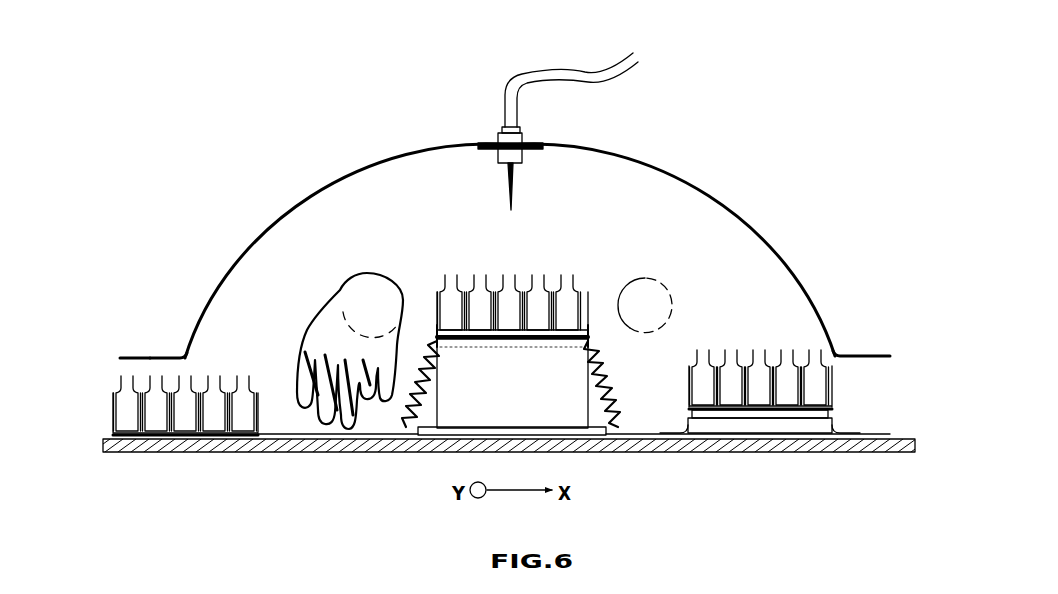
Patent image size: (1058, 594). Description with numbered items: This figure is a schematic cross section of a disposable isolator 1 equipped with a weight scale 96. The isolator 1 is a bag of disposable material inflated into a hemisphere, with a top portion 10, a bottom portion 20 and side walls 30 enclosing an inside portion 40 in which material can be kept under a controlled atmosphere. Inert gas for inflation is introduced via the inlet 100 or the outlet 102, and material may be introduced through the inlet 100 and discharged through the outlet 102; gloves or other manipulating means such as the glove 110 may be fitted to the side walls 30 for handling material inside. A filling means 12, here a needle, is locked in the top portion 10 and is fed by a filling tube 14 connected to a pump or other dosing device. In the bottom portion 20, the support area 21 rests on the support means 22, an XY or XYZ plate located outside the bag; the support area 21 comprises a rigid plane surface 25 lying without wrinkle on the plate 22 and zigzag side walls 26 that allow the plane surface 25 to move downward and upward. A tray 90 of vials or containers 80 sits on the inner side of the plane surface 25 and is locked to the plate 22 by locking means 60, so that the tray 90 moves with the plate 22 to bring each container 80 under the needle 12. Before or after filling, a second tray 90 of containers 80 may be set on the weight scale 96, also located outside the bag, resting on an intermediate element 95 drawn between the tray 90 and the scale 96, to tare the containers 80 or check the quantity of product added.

The disposable isolator 1 is at (302, 130).
The top portion 10 is at (410, 146).
The filling means (needle) 12 is at (492, 132).
The filling tube 14 is at (560, 75).
The bottom portion 20 is at (206, 346).
The support area 21 is at (438, 440).
The support means (XY or XYZ plate) 22 is at (523, 402).
The plane surface 25 is at (478, 344).
The zigzag side walls 26 is at (618, 382).
The side walls 30 is at (261, 226).
The inside portion 40 is at (597, 246).
The locking means 60 is at (578, 344).
The containers (vials) 80 is at (562, 291).
The tray 90 is at (437, 307).
The intermediate plate 95 is at (757, 412).
The weight scale 96 is at (757, 434).
The inlet means 100 is at (138, 357).
The outlet means 102 is at (866, 355).
The working table / outlet means 110 is at (305, 334).